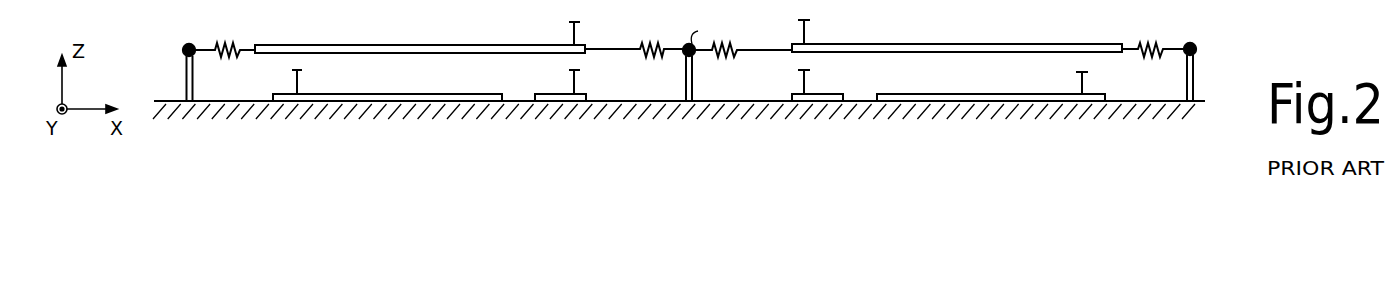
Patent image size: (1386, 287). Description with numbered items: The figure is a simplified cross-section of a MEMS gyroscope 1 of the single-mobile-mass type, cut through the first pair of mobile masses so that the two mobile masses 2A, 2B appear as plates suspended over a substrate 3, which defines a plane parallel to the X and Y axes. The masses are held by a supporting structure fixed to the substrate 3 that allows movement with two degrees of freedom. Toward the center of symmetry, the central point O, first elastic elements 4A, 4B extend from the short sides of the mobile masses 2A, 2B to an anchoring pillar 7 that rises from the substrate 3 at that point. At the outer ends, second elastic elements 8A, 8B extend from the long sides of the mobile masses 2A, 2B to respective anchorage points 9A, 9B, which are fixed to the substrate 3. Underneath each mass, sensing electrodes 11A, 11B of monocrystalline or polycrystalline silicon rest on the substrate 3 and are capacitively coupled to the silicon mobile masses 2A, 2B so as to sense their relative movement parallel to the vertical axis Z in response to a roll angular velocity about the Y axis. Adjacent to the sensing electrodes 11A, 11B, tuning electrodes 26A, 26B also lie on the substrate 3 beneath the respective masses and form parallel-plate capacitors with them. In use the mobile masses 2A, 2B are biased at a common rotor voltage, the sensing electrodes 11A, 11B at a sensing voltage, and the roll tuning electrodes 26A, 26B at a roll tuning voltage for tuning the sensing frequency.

The gyroscope 1 is at (1213, 31).
The mobile mass 2A is at (344, 45).
The mobile mass 2B is at (918, 44).
The substrate 3 is at (1183, 104).
The first elastic element 4A is at (647, 43).
The first elastic element 4B is at (738, 45).
The anchoring pillar 7 is at (694, 79).
The second elastic element 8A is at (219, 42).
The second elastic element 8B is at (1160, 58).
The anchorage point 9A is at (182, 51).
The anchorage point 9B is at (1197, 49).
The sensing electrode 11A is at (349, 95).
The sensing electrode 11B is at (935, 94).
The tuning electrode 26A is at (583, 95).
The tuning electrode 26B is at (843, 95).